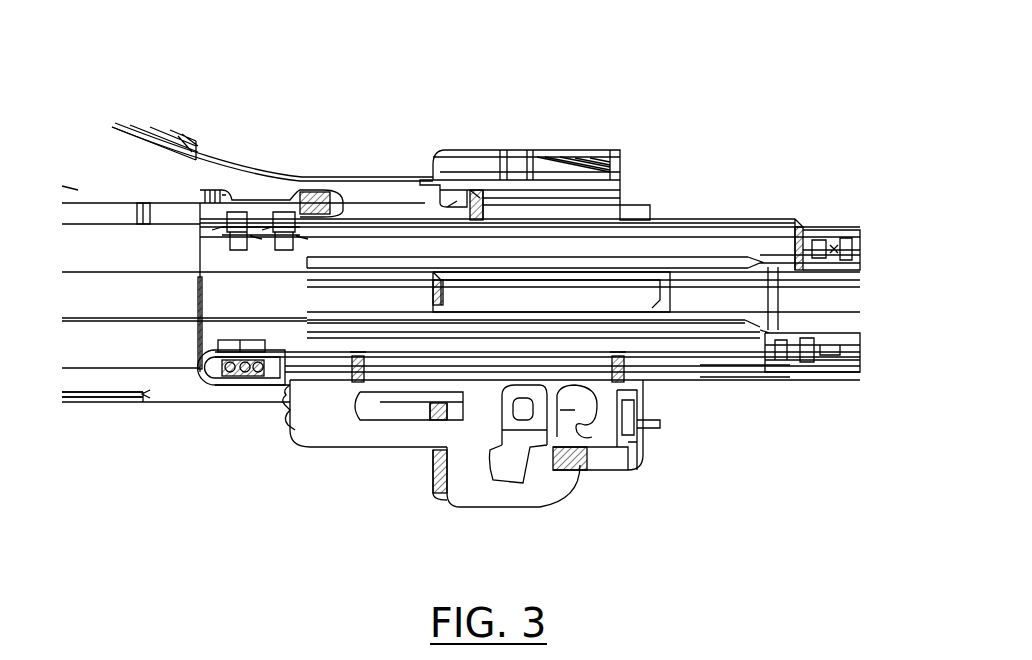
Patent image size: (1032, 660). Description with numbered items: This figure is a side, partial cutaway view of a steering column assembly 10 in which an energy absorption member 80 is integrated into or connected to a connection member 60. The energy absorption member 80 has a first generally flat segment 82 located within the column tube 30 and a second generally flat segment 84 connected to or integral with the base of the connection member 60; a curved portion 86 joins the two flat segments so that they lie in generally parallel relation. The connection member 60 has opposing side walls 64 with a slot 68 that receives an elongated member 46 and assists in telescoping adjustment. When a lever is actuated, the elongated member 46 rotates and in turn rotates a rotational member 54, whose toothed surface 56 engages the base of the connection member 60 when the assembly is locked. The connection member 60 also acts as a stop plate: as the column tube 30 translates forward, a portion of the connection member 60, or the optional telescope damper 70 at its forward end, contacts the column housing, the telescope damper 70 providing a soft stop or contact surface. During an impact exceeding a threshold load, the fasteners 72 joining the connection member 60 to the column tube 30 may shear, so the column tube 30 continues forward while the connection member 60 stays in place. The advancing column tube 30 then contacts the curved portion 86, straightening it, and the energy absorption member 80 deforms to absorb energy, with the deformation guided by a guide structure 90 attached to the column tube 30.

The steering column assembly 10 is at (170, 75).
The column tube 30 is at (727, 222).
The elongated member 46 is at (525, 410).
The rotational member 54 is at (582, 477).
The toothed surface 56 is at (553, 420).
The connection member 60 is at (633, 473).
The side walls 64 is at (477, 477).
The slot 68 is at (410, 410).
The telescope damper 70 is at (287, 420).
The fasteners 72 is at (620, 363).
The energy absorption member 80 is at (189, 327).
The first generally flat segment 82 is at (322, 355).
The second generally flat segment 84 is at (262, 385).
The curved portion 86 is at (195, 382).
The guide structure 90 is at (217, 385).